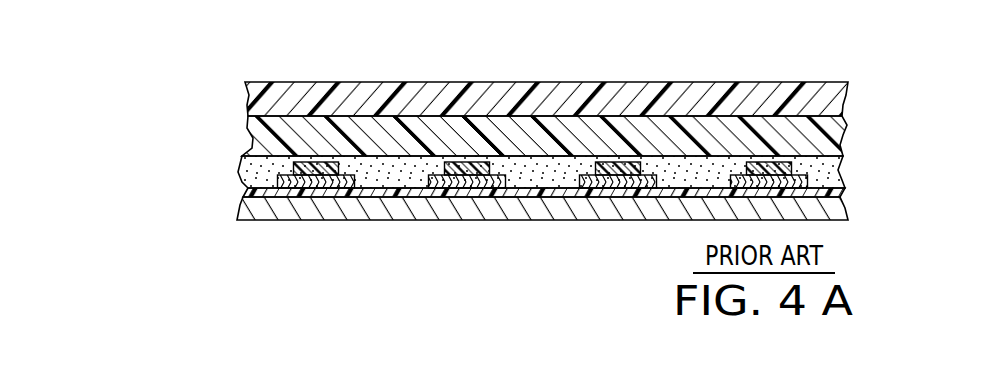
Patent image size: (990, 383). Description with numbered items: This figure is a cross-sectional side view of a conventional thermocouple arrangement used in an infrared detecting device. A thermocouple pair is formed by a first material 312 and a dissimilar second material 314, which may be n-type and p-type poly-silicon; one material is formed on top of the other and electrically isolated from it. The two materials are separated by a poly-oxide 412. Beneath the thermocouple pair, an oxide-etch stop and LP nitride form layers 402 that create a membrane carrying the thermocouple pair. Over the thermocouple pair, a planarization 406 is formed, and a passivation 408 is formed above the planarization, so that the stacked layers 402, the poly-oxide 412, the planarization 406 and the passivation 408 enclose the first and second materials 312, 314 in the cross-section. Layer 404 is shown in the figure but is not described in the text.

The oxide-etch stop and LP nitride layers 402 is at (242, 189).
The insulating layer 404 is at (827, 173).
The planarization 406 is at (822, 143).
The passivation 408 is at (811, 92).
The first material 312 is at (296, 164).
The second material 314 is at (337, 187).
The poly-oxide 412 is at (278, 183).